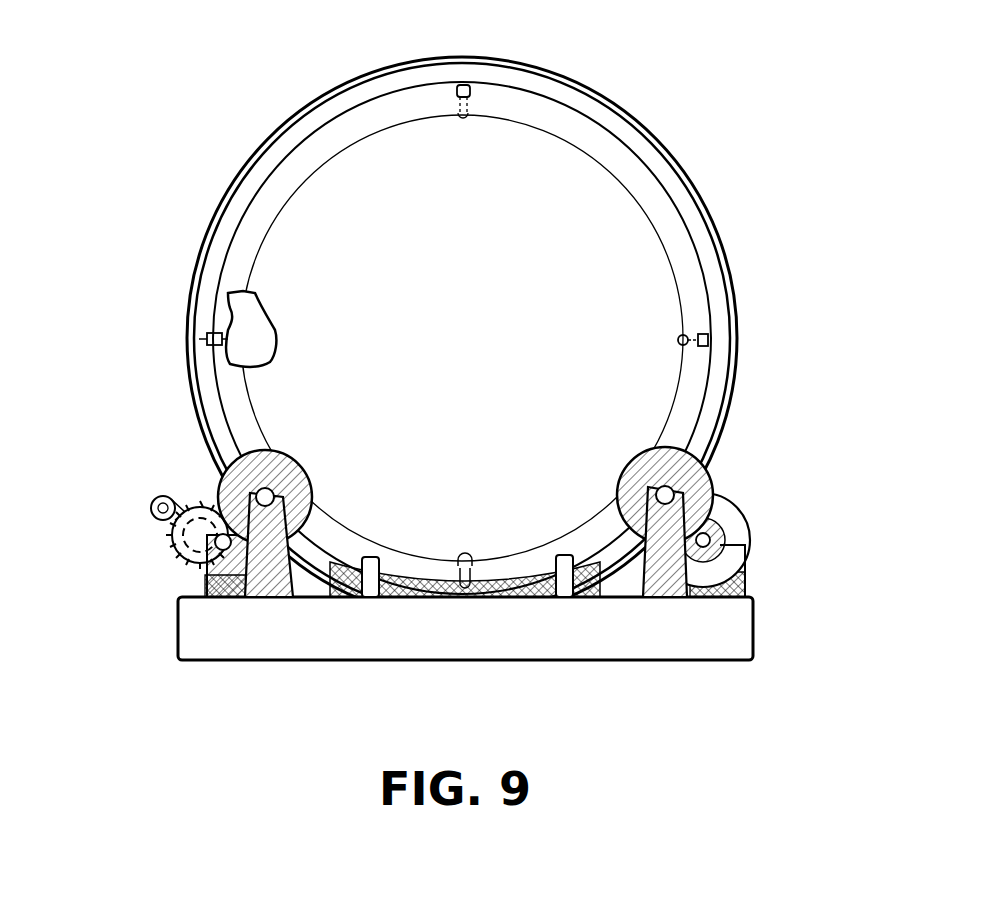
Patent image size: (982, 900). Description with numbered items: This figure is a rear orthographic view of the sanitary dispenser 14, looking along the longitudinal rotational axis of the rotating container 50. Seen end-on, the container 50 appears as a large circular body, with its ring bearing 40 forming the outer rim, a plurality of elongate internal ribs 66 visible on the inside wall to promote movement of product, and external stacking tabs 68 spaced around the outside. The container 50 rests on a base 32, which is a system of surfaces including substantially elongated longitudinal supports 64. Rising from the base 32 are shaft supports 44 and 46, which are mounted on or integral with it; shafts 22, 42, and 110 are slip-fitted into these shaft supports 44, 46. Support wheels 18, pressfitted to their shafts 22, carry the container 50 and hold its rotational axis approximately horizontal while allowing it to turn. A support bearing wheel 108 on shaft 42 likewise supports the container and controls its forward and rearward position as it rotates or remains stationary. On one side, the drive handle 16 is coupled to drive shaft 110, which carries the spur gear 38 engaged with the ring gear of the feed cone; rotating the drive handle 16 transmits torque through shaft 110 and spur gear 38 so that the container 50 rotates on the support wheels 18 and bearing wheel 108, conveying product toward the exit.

The sanitary dispenser 14 is at (134, 141).
The drive handle 16 is at (222, 542).
The support wheel 18 is at (255, 458).
The shaft 22 is at (262, 495).
The base 32 is at (275, 650).
The spur gear 38 is at (190, 492).
The ring bearing 40 is at (657, 140).
The shaft 42 is at (705, 543).
The shaft support 44 is at (218, 600).
The shaft support 46 is at (265, 587).
The container 50 is at (645, 262).
The elongated longitudinal support 64 is at (370, 592).
The internal rib 66 is at (273, 325).
The external stacking tab 68 is at (465, 85).
The support bearing wheel 108 is at (205, 580).
The drive shaft 110 is at (173, 540).